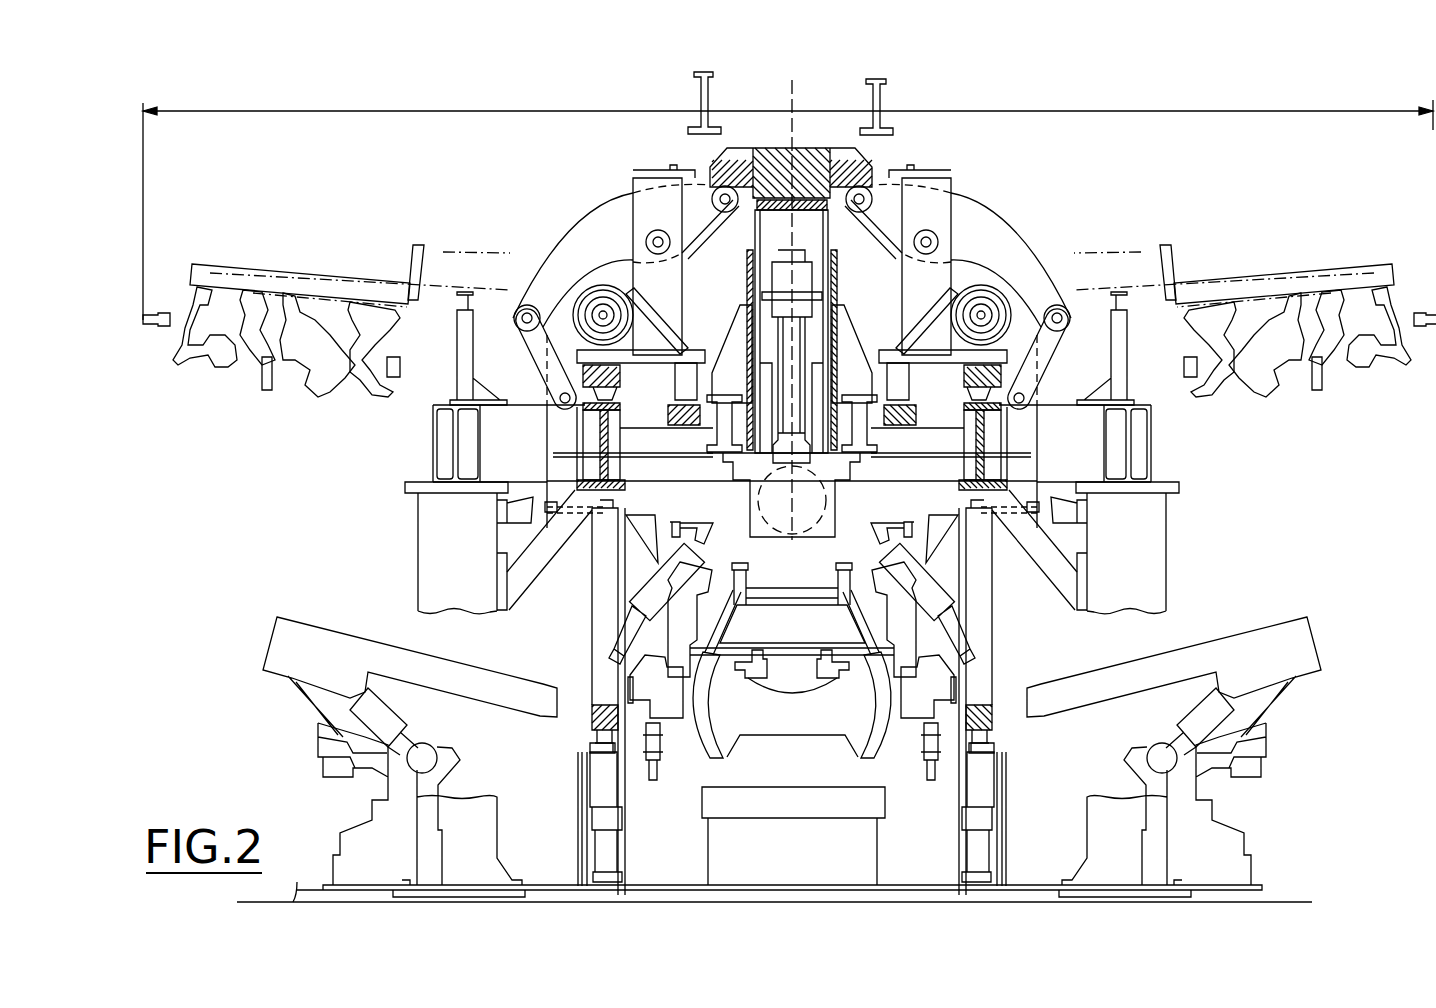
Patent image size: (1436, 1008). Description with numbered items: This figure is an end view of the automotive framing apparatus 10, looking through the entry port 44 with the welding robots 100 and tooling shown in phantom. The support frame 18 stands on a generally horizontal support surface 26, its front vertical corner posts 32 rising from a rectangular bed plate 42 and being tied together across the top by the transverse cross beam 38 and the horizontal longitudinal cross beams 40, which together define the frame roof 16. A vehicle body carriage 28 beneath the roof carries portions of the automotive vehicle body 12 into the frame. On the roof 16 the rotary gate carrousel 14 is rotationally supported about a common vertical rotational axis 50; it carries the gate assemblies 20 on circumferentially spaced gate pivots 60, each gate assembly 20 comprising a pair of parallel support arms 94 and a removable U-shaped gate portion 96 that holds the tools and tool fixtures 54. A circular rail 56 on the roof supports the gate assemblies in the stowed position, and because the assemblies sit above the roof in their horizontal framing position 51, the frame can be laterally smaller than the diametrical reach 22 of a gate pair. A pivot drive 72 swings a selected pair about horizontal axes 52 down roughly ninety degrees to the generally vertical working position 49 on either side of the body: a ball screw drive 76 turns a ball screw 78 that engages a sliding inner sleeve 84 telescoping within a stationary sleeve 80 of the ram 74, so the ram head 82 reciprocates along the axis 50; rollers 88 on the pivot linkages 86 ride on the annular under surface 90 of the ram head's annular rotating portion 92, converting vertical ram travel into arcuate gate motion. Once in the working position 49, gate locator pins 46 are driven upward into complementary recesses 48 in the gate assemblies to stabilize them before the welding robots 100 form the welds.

The automotive framing apparatus 10 is at (1065, 173).
The automotive vehicle body 12 is at (885, 745).
The rotary gate carrousel 14 is at (888, 358).
The roof 16 is at (1087, 450).
The support frame 18 is at (1170, 513).
The gate assembly 20 is at (441, 255).
The diametrical reach 22 is at (438, 113).
The support surface 26 is at (1290, 900).
The vehicle body carriage 28 is at (790, 795).
The front vertical corner posts 32 is at (420, 550).
The rear transverse cross beam 38 is at (1058, 413).
The horizontal longitudinal cross beams 40 is at (608, 448).
The rectangular bed plate 42 is at (595, 898).
The entry port 44 is at (1085, 805).
The gate locator pins 46 is at (598, 738).
The complementary recesses 48 is at (590, 724).
The working position 49 is at (590, 603).
The common vertical rotational axis 50 is at (790, 96).
The framing position 51 is at (394, 266).
The horizontal axis 52 is at (600, 312).
The tools and tool fixtures 54 is at (227, 320).
The circular rail 56 is at (458, 300).
The gate pivot 60 is at (610, 298).
The pivot drive 72 is at (810, 533).
The ram 74 is at (828, 148).
The ball screw drive 76 is at (780, 338).
The ball screw 78 is at (805, 283).
The stationary sleeve 80 is at (748, 280).
The ram head 82 is at (770, 166).
The sliding inner sleeve 84 is at (838, 256).
The pivot linkage 86 is at (584, 230).
The roller 88 is at (858, 187).
The annular under surface 90 is at (813, 183).
The annular rotating portion 92 is at (768, 160).
The parallel support arms 94 is at (553, 429).
The U-shaped gate portion 96 is at (210, 290).
The welding robots 100 is at (273, 633).